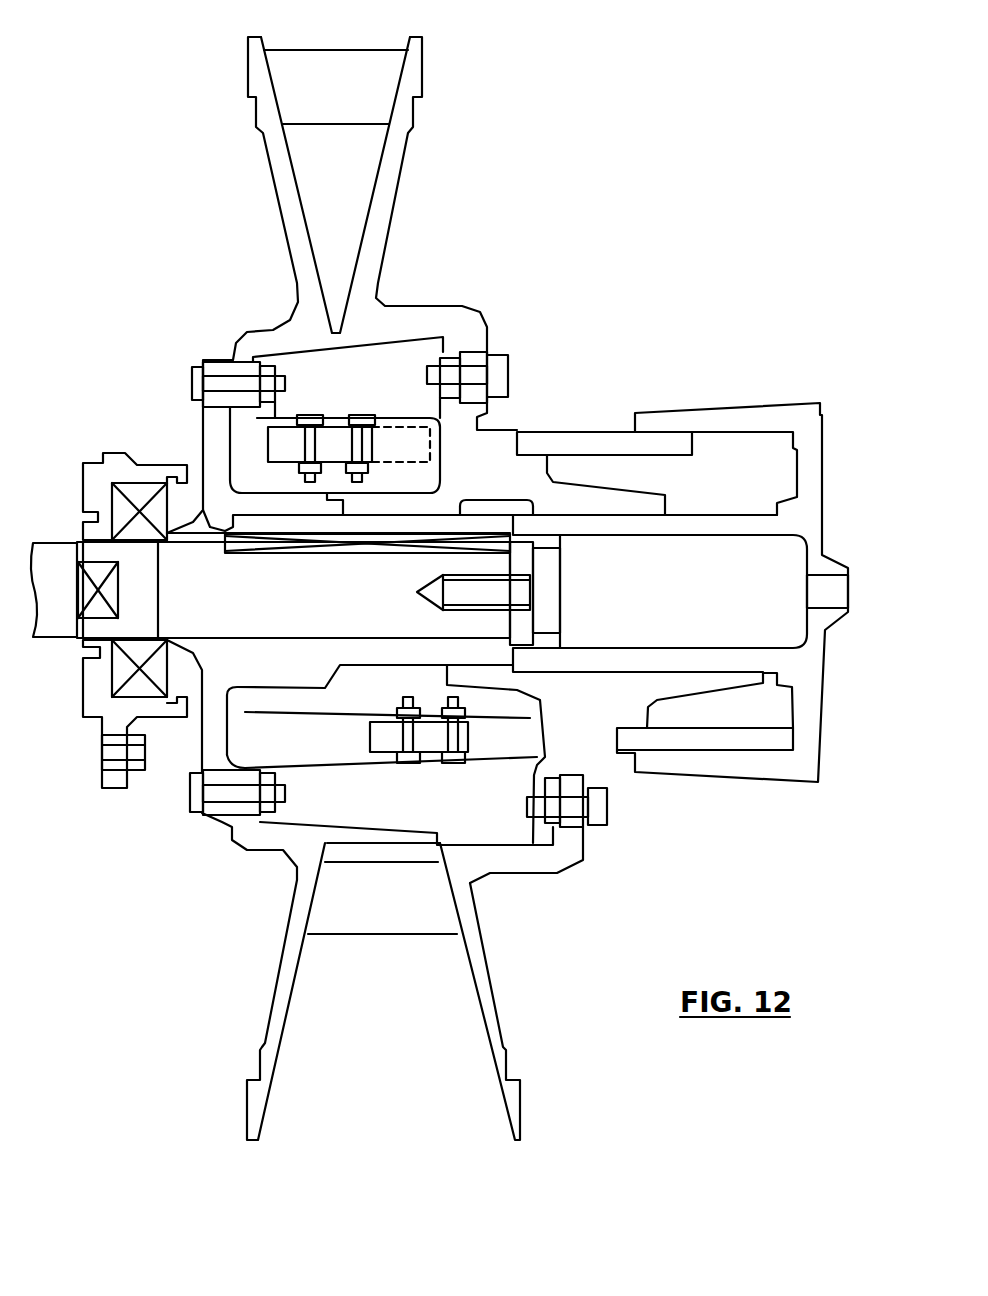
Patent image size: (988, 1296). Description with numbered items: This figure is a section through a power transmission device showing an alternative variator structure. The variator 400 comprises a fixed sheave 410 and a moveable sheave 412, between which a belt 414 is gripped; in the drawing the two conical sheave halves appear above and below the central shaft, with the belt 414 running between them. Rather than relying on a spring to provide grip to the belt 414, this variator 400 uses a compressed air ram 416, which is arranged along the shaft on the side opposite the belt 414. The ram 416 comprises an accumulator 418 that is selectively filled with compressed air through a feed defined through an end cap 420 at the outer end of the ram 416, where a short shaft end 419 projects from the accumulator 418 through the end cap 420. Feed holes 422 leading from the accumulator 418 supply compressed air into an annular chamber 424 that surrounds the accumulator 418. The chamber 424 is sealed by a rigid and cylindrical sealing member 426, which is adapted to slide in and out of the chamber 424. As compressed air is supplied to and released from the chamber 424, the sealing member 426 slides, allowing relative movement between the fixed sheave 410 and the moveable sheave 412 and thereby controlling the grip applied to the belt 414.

The variator 400 is at (170, 257).
The fixed sheave 410 is at (247, 68).
The moveable sheave 412 is at (413, 80).
The belt 414 is at (329, 66).
The compressed air ram 416 is at (707, 580).
The accumulator 418 is at (720, 590).
The shaft 419 is at (832, 593).
The end cap 420 is at (810, 702).
The feed holes 422 is at (773, 662).
The annular chamber 424 is at (748, 483).
The sealing member 426 is at (542, 438).